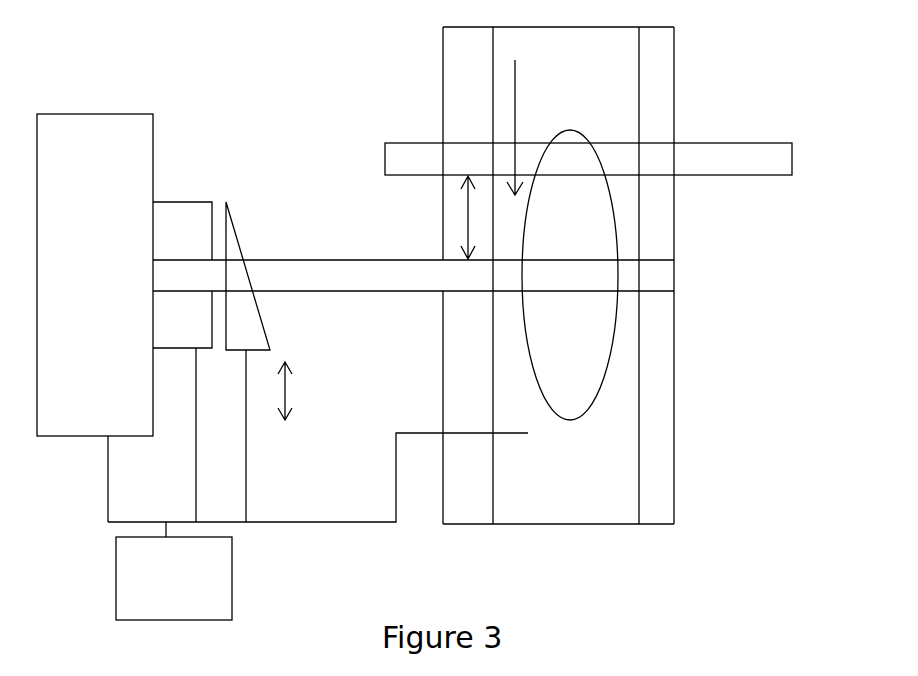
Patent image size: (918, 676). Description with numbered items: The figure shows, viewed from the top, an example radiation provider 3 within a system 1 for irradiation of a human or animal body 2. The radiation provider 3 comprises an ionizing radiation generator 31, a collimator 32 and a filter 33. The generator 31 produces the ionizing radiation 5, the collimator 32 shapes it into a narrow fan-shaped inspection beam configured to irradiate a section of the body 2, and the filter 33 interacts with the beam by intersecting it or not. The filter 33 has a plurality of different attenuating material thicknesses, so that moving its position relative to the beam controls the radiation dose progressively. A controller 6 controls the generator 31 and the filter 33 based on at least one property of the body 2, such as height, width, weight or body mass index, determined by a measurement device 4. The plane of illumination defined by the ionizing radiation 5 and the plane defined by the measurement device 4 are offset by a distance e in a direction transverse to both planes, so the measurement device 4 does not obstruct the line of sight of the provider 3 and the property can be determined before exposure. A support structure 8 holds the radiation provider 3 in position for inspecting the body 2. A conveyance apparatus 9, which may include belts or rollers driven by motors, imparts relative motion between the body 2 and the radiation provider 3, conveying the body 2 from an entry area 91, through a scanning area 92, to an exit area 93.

The system 1 is at (350, 542).
The human or animal body 2 is at (570, 275).
The radiation provider 3 is at (75, 462).
The ionizing radiation generator 31 is at (120, 400).
The collimator 32 is at (190, 216).
The filter 33 is at (238, 234).
The measurement device 4 is at (765, 163).
The ionizing radiation 5 is at (309, 274).
The controller 6 is at (174, 571).
The support structure 8 is at (656, 275).
The conveyance apparatus 9 is at (490, 275).
The entry area 91 is at (614, 66).
The scanning area 92 is at (591, 283).
The exit area 93 is at (604, 498).